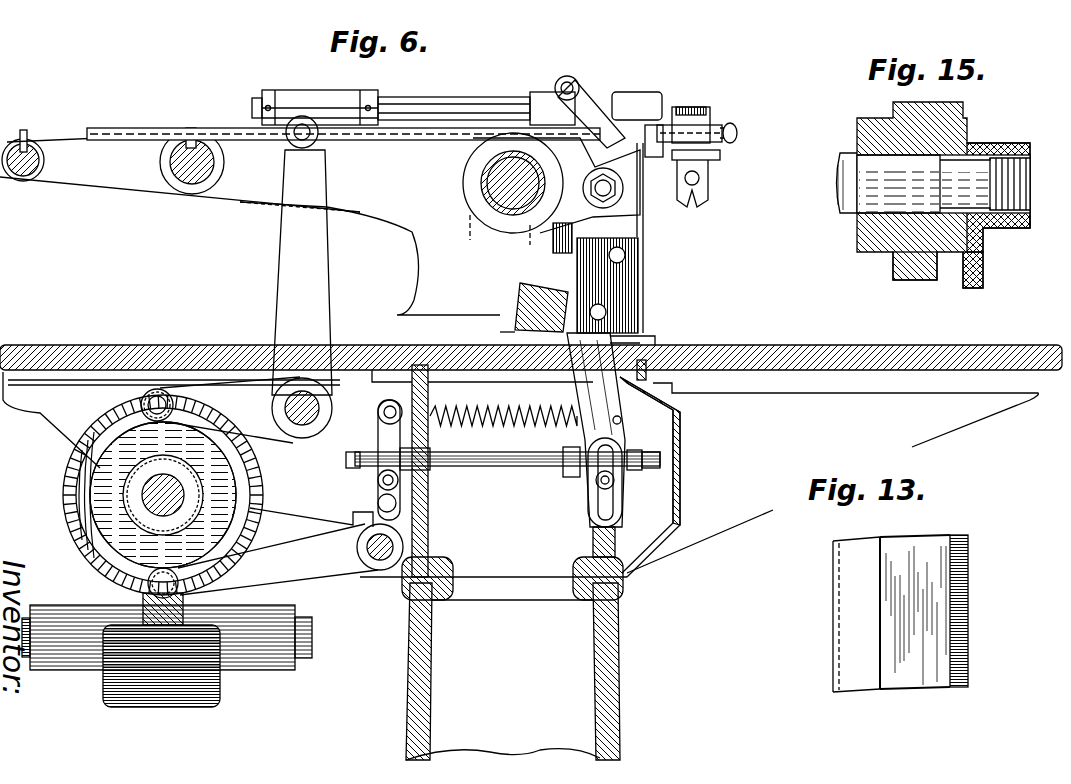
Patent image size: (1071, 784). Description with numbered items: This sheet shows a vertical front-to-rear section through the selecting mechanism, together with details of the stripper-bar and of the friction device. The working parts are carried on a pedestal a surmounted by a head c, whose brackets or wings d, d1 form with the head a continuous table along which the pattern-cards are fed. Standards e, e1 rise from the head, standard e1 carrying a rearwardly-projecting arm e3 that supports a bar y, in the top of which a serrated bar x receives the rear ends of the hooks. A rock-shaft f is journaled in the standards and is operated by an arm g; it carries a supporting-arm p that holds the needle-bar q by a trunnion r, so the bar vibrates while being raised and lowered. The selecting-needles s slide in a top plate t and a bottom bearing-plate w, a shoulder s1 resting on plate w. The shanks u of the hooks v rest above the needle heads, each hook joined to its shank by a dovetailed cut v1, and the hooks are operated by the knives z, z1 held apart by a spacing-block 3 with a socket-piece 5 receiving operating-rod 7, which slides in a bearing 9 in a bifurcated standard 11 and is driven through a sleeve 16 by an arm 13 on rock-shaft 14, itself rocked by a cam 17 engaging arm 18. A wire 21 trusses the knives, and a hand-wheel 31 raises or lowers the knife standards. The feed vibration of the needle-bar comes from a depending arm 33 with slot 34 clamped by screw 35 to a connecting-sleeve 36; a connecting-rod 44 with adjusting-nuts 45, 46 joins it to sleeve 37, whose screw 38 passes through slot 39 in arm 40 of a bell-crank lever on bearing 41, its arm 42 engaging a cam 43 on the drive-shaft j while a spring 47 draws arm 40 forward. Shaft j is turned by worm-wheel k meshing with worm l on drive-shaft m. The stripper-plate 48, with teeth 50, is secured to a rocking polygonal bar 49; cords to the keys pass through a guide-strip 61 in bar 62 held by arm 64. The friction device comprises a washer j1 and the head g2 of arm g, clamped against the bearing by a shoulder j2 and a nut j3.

In FIG. 6, the spacing-block 3 is at (672, 122).
In FIG. 6, the socket-piece 5 is at (650, 94).
In FIG. 6, the operating-rod 7 is at (452, 98).
In FIG. 6, the bearing 9 is at (546, 94).
In FIG. 6, the bifurcated standard 11 is at (582, 100).
In FIG. 6, the arm 13 is at (302, 255).
In FIG. 6, the rock-shaft 14 is at (295, 426).
In FIG. 6, the sleeve 16 is at (312, 96).
In FIG. 6, the cam 17 is at (70, 490).
In FIG. 6, the arm 18 is at (220, 410).
In FIG. 6, the wire 21 is at (710, 198).
In FIG. 6, the hand-wheel 31 is at (563, 253).
In FIG. 6, the depending arm 33 is at (621, 420).
In FIG. 6, the elongated slot 34 is at (620, 505).
In FIG. 6, the bolt or screw 35 is at (597, 486).
In FIG. 6, the connecting-sleeve 36 is at (566, 470).
In FIG. 6, the connecting-sleeve 37 is at (435, 466).
In FIG. 6, the screw or bolt 38 is at (378, 482).
In FIG. 6, the elongated slot 39 is at (378, 504).
In FIG. 6, the arm of bell-crank lever 40 is at (380, 440).
In FIG. 6, the bearing 41 is at (383, 572).
In FIG. 6, the arm of bell-crank lever 42 is at (278, 559).
In FIG. 6, the cam 43 is at (205, 495).
In FIG. 6, the connecting-rod 44 is at (505, 453).
In FIG. 6, the adjusting-nut 45 is at (656, 455).
In FIG. 6, the adjusting-nut 46 is at (346, 459).
In FIG. 6, the spring 47 is at (500, 411).
In FIG. 6, the stripper-plate 48 is at (566, 408).
In FIG. 13, the stripper-plate 48 is at (915, 675).
In FIG. 6, the polygonal bar 49 is at (530, 290).
In FIG. 13, the polygonal bar 49 is at (850, 673).
In FIG. 13, the teeth 50 is at (970, 607).
In FIG. 6, the guide-strip 61 is at (28, 140).
In FIG. 6, the bar 62 is at (28, 180).
In FIG. 6, the rearwardly-projecting arm 64 is at (100, 178).
In FIG. 6, the pedestal a is at (512, 658).
In FIG. 6, the head c is at (566, 471).
In FIG. 6, the bracket or wing d is at (531, 394).
In FIG. 6, the bracket or wing d1 is at (845, 382).
In FIG. 15, the standard e is at (896, 275).
In FIG. 6, the standard e1 is at (370, 248).
In FIG. 6, the rearwardly-projecting arm e3 is at (238, 183).
In FIG. 6, the rock-shaft f is at (500, 205).
In FIG. 15, the rock-shaft f is at (840, 213).
In FIG. 15, the arm g is at (980, 282).
In FIG. 15, the head of arm g g2 is at (968, 143).
In FIG. 6, the shaft j is at (150, 497).
In FIG. 15, the washer j1 is at (860, 128).
In FIG. 15, the shoulder j2 is at (858, 160).
In FIG. 15, the nut j3 is at (1030, 225).
In FIG. 6, the worm-wheel k is at (158, 620).
In FIG. 6, the worm l is at (185, 600).
In FIG. 6, the drive-shaft m is at (312, 633).
In FIG. 6, the supporting-arm p is at (525, 225).
In FIG. 6, the needle-bar q is at (616, 240).
In FIG. 6, the trunnion r is at (603, 188).
In FIG. 6, the selecting-needle s is at (644, 200).
In FIG. 6, the shoulder s1 is at (650, 338).
In FIG. 6, the plate t is at (653, 157).
In FIG. 6, the shank u is at (404, 140).
In FIG. 6, the hook v is at (738, 130).
In FIG. 6, the dovetailed cut v1 is at (738, 138).
In FIG. 6, the bearing-plate w is at (658, 335).
In FIG. 6, the serrated bar x is at (193, 126).
In FIG. 6, the bar y is at (188, 180).
In FIG. 6, the knife z is at (697, 108).
In FIG. 6, the knife z1 is at (706, 158).